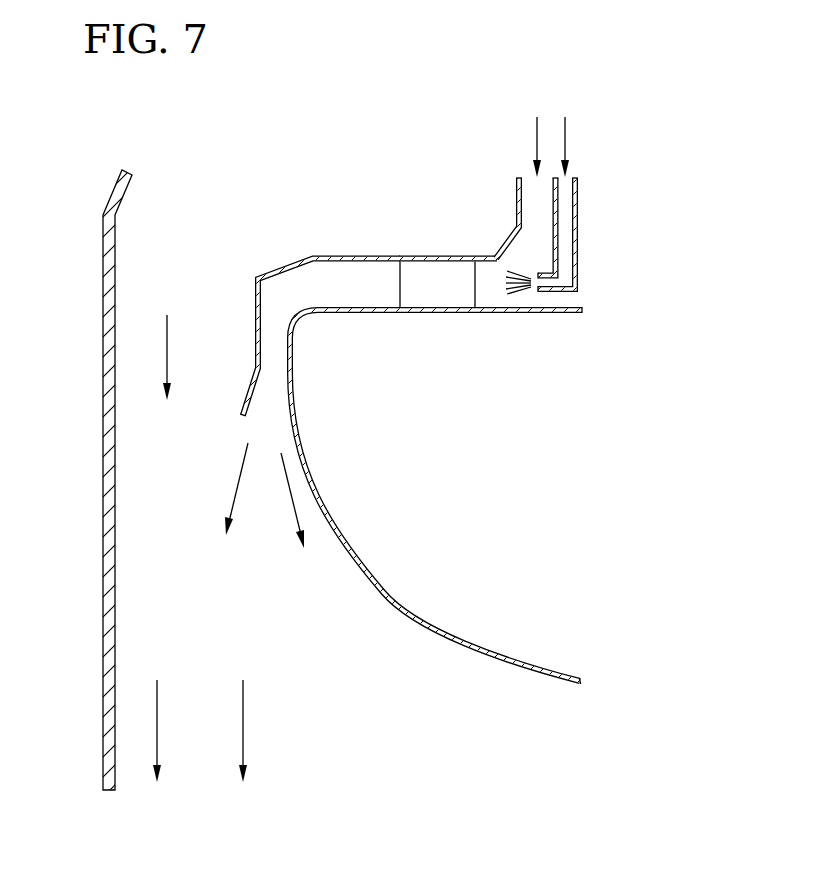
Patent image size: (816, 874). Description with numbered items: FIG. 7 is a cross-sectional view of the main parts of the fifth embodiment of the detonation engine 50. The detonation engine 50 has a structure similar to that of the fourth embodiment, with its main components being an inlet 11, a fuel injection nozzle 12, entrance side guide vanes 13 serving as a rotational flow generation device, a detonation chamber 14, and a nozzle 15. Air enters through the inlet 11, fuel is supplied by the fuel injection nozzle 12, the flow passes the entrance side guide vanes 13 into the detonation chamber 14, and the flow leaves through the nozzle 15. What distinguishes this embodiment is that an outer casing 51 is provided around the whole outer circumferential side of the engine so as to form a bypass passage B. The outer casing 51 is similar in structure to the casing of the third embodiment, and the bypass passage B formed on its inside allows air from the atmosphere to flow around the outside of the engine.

The detonation engine 50 is at (392, 126).
The inlet 11 is at (532, 188).
The fuel injection nozzle 12 is at (533, 308).
The entrance side guide vanes 13 is at (432, 283).
The detonation chamber 14 is at (357, 283).
The nozzle 15 is at (272, 400).
The outer casing 51 is at (104, 460).
The bypass passage B is at (153, 580).